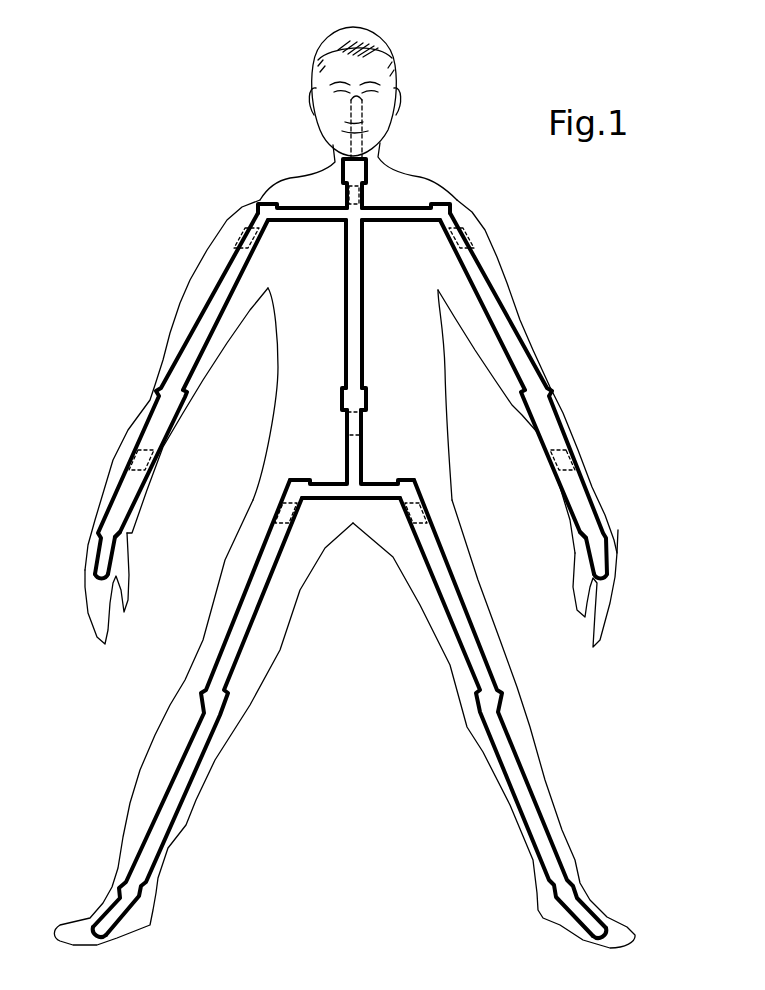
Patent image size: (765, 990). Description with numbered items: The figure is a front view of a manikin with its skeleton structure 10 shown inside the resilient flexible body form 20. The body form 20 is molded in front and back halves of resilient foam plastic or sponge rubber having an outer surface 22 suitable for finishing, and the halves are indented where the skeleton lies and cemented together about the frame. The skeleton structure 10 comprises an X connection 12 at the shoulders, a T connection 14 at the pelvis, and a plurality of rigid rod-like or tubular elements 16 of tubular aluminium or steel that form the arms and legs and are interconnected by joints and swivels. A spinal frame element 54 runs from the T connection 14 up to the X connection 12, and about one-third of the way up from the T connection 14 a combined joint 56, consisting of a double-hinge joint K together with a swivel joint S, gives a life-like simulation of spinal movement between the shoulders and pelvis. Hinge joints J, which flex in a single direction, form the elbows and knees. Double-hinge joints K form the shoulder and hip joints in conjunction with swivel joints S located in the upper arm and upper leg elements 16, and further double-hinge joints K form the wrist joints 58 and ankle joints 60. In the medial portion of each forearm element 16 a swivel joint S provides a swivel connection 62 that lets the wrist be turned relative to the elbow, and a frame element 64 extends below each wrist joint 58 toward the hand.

The skeleton structure 10 is at (363, 288).
The X connection 12 is at (365, 208).
The T connection 14 is at (362, 484).
The rigid rod-like or tubular elements 16 is at (292, 221).
The resilient flexible body form 20 is at (445, 366).
The outer surface 22 is at (278, 366).
The spinal frame element 54 is at (346, 305).
The combined joint 56 is at (368, 400).
The wrist joint 58 is at (123, 537).
The ankle joint 60 is at (143, 891).
The swivel connection 62 is at (151, 458).
The frame element 64 is at (92, 572).
The double-hinge joint K is at (341, 178).
The hinge joint J is at (156, 389).
The swivel joint S is at (346, 199).